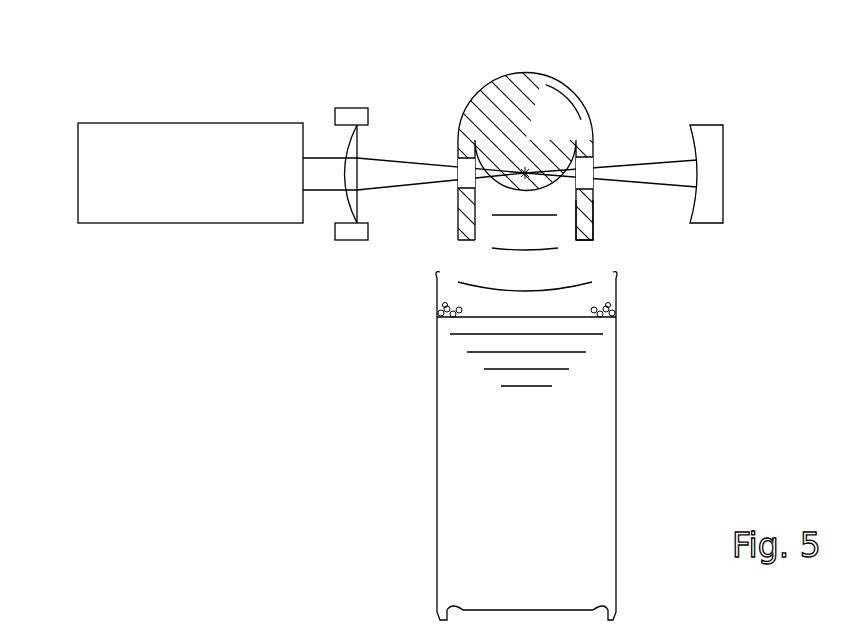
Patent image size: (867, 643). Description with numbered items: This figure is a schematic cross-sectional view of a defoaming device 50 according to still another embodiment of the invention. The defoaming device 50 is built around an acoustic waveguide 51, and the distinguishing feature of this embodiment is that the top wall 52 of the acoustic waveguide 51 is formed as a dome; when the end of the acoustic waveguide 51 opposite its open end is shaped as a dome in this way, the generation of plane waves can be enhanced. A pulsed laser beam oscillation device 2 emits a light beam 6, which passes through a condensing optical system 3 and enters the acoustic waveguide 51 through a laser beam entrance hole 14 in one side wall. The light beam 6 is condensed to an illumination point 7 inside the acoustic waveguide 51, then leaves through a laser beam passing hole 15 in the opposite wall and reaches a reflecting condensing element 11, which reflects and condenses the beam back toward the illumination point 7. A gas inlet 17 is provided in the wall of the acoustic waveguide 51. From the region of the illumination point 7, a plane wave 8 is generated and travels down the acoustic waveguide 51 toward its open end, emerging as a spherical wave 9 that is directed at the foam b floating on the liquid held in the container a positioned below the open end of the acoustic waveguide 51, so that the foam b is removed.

The pulsed laser beam oscillation device 2 is at (178, 224).
The condensing optical system 3 is at (345, 240).
The light beam 6 is at (327, 186).
The illumination point 7 is at (524, 167).
The plane wave 8 is at (508, 216).
The spherical wave 9 is at (492, 290).
The reflecting condensing element 11 is at (724, 180).
The laser beam entrance hole 14 is at (458, 186).
The laser beam passing hole 15 is at (594, 158).
The gas inlet 17 is at (594, 220).
The defoaming device 50 is at (677, 95).
The acoustic waveguide 51 is at (565, 165).
The top wall 52 is at (545, 76).
The container a is at (437, 388).
The foam b is at (616, 310).